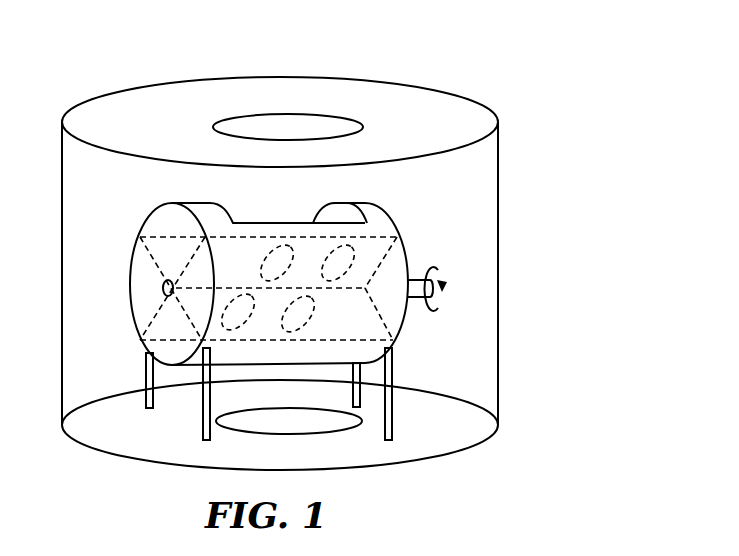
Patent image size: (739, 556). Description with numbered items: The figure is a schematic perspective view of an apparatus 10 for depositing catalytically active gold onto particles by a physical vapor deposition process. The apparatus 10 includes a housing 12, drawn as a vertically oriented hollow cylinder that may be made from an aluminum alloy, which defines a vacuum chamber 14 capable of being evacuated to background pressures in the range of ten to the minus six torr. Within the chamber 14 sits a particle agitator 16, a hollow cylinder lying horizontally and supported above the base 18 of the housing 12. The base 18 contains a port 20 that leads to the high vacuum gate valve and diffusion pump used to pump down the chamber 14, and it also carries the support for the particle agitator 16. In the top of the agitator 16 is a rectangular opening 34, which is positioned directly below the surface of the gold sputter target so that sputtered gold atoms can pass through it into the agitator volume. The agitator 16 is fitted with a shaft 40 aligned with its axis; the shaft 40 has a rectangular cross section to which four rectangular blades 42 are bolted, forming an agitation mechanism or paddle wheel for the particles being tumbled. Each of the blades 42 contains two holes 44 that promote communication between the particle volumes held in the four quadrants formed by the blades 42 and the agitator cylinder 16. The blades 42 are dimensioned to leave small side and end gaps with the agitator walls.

The apparatus 10 is at (372, 48).
The housing 12 is at (500, 238).
The vacuum chamber 14 is at (437, 127).
The particle agitator 16 is at (388, 212).
The base 18 is at (447, 432).
The port 20 is at (308, 428).
The rectangular opening 34 is at (297, 223).
The shaft 40 is at (443, 300).
The rectangular blades 42 is at (370, 318).
The holes 44 is at (350, 260).